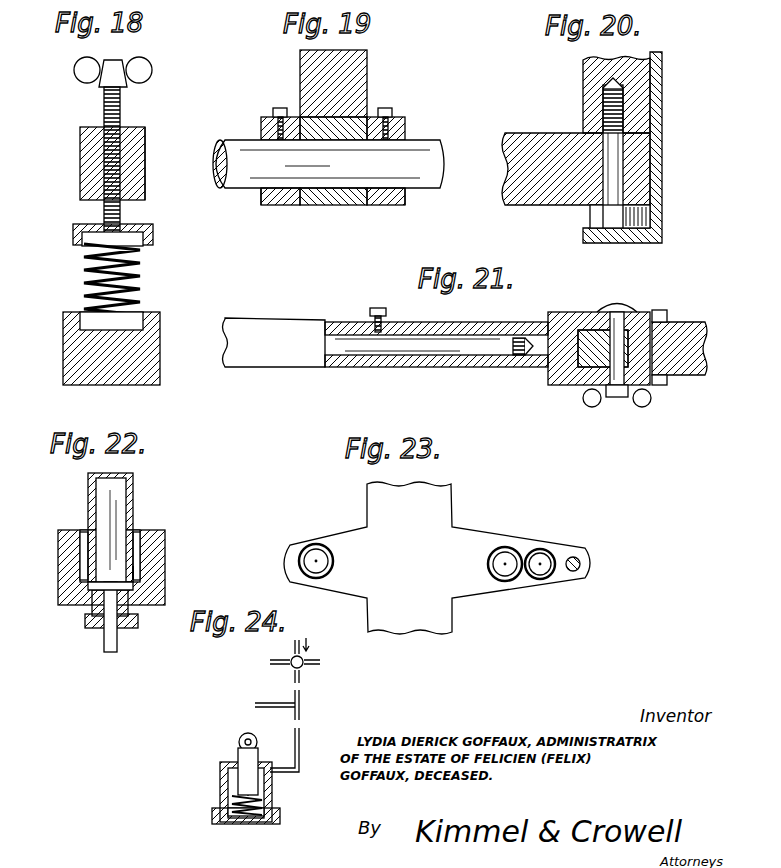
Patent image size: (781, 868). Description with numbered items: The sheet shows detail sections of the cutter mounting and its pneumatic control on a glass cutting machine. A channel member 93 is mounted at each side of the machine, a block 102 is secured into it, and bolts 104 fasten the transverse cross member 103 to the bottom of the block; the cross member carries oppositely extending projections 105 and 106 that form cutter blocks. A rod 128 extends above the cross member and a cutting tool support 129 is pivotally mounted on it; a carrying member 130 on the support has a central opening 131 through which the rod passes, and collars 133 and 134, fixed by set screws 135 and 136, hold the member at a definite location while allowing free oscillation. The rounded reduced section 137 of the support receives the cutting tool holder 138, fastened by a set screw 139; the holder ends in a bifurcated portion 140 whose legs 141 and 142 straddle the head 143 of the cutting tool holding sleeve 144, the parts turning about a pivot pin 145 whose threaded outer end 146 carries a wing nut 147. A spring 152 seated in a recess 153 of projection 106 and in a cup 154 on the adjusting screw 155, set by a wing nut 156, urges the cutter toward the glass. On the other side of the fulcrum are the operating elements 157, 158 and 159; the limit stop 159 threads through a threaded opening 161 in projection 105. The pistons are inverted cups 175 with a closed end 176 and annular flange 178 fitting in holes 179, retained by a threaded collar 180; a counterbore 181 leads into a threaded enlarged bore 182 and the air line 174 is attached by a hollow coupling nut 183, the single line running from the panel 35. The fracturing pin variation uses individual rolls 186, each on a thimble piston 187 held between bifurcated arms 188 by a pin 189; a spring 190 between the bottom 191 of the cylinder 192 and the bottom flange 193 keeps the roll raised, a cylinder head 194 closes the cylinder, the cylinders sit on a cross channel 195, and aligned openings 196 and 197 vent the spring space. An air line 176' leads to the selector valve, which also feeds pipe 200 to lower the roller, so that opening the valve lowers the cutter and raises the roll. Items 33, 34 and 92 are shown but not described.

In FIG. 18, the frame member 33 is at (72, 165).
In FIG. 19, the frame member 33 is at (320, 154).
In FIG. 20, the frame member 33 is at (572, 157).
In FIG. 23, the plate 34 is at (459, 561).
In FIG. 22, the panel 35 is at (85, 567).
In FIG. 24, the panel 35 is at (274, 793).
In FIG. 20, the bar 92 is at (595, 94).
In FIG. 20, the channel member 93 is at (655, 192).
In FIG. 20, the block 102 is at (590, 77).
In FIG. 18, the cross member 103 is at (86, 348).
In FIG. 20, the cross member 103 is at (561, 128).
In FIG. 22, the cross member 103 is at (85, 567).
In FIG. 23, the cross member 103 is at (459, 561).
In FIG. 20, the bolts 104 is at (593, 214).
In FIG. 22, the projection 105 is at (58, 540).
In FIG. 23, the projection 105 is at (479, 547).
In FIG. 18, the projection 106 is at (85, 349).
In FIG. 23, the projection 106 is at (459, 561).
In FIG. 19, the rod 128 is at (235, 152).
In FIG. 18, the cutting tool support 129 is at (147, 128).
In FIG. 19, the cutting tool support 129 is at (369, 61).
In FIG. 21, the cutting tool support 129 is at (245, 335).
In FIG. 19, the carrying member 130 is at (355, 206).
In FIG. 19, the central opening 131 is at (335, 206).
In FIG. 19, the collar 133 is at (405, 200).
In FIG. 19, the collar 134 is at (263, 200).
In FIG. 19, the set screw 135 is at (412, 98).
In FIG. 19, the set screw 136 is at (274, 109).
In FIG. 21, the reduced section 137 is at (380, 348).
In FIG. 21, the cutting tool holder 138 is at (420, 345).
In FIG. 21, the set screw 139 is at (392, 298).
In FIG. 21, the bifurcated portion 140 is at (577, 358).
In FIG. 21, the leg 141 is at (656, 311).
In FIG. 21, the leg 142 is at (658, 384).
In FIG. 21, the head 143 is at (585, 380).
In FIG. 21, the cutting tool holding sleeve 144 is at (680, 326).
In FIG. 21, the pivot pin 145 is at (614, 310).
In FIG. 21, the threaded outer end 146 is at (601, 412).
In FIG. 21, the wing nut 147 is at (598, 400).
In FIG. 18, the spring 152 is at (82, 278).
In FIG. 23, the spring 152 is at (300, 571).
In FIG. 18, the recess 153 is at (78, 328).
In FIG. 23, the recess 153 is at (288, 565).
In FIG. 18, the cup 154 is at (153, 240).
In FIG. 18, the adjusting screw 155 is at (108, 236).
In FIG. 18, the wing nut 156 is at (100, 84).
In FIG. 22, the operating element 157 is at (120, 523).
In FIG. 23, the operating element 157 is at (491, 547).
In FIG. 23, the air actuated piston 158 is at (546, 551).
In FIG. 23, the limit stop 159 is at (580, 560).
In FIG. 23, the threaded opening 161 is at (585, 569).
In FIG. 22, the air line 174 is at (76, 625).
In FIG. 24, the air line 174 is at (276, 699).
In FIG. 22, the inverted cup 175 is at (120, 523).
In FIG. 23, the inverted cup 175 is at (479, 564).
In FIG. 22, the closed end 176 is at (98, 523).
In FIG. 24, the air line 176' is at (284, 660).
In FIG. 22, the annular flange 178 is at (141, 578).
In FIG. 22, the hole 179 is at (141, 560).
In FIG. 23, the hole 179 is at (483, 557).
In FIG. 22, the threaded collar 180 is at (82, 530).
In FIG. 23, the threaded collar 180 is at (437, 555).
In FIG. 22, the counterbore 181 is at (76, 617).
In FIG. 22, the threaded enlarged bore 182 is at (76, 617).
In FIG. 22, the hollow coupling nut 183 is at (88, 606).
In FIG. 24, the individual roll 186 is at (274, 729).
In FIG. 24, the thimble valve or piston 187 is at (241, 757).
In FIG. 24, the bifurcated arms 188 is at (226, 757).
In FIG. 24, the pin 189 is at (246, 733).
In FIG. 24, the spring 190 is at (231, 823).
In FIG. 24, the bottom 191 is at (231, 811).
In FIG. 24, the cylinder 192 is at (253, 811).
In FIG. 24, the bottom flange 193 is at (253, 811).
In FIG. 24, the cylinder head 194 is at (253, 811).
In FIG. 24, the cross channel 195 is at (222, 818).
In FIG. 24, the opening 196 is at (246, 815).
In FIG. 24, the opening 197 is at (231, 811).
In FIG. 24, the pipe 200 is at (294, 729).